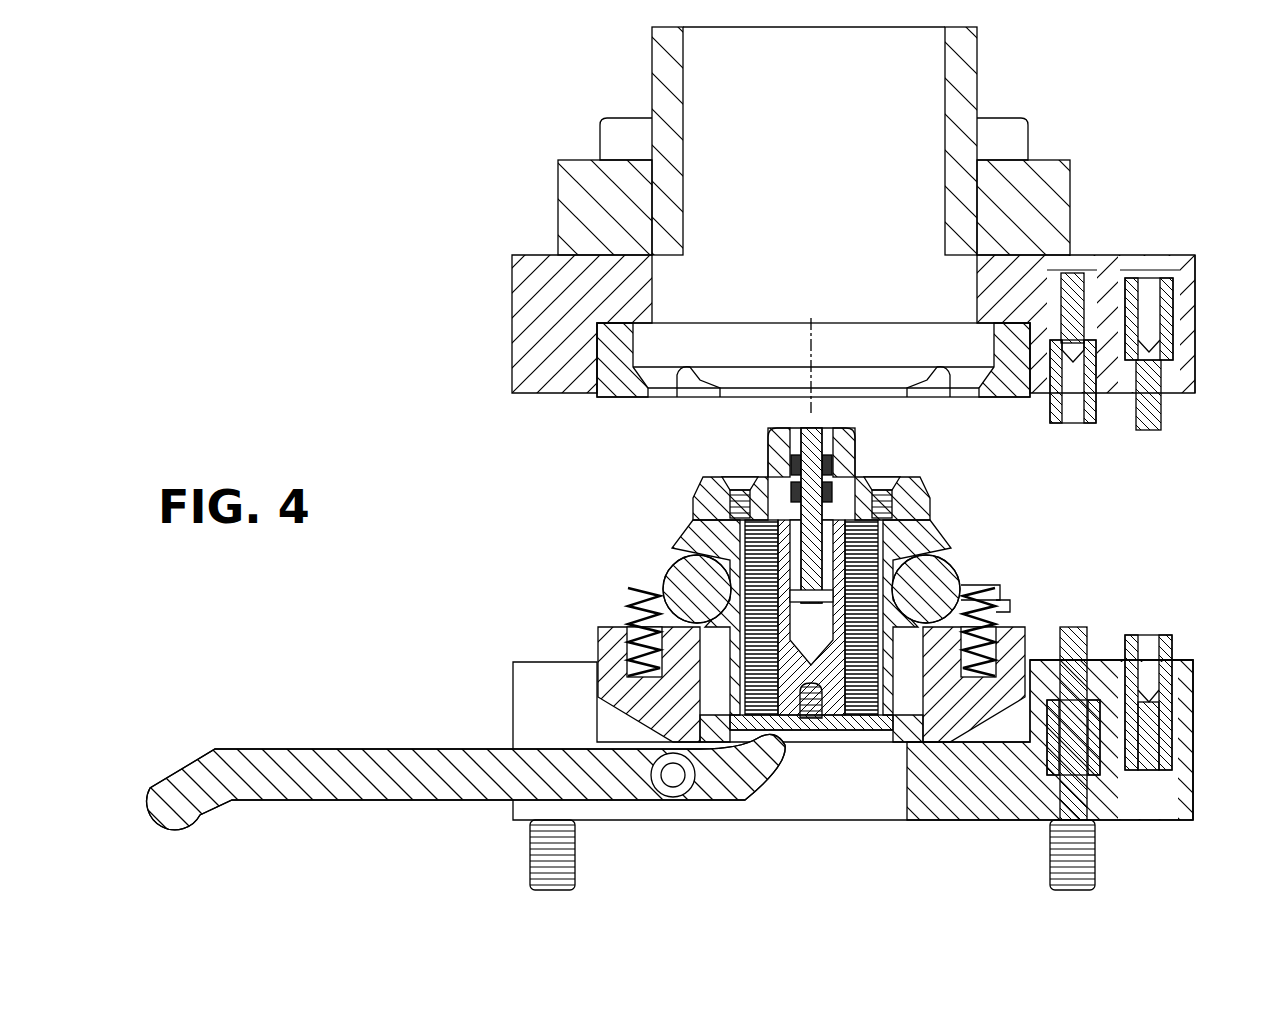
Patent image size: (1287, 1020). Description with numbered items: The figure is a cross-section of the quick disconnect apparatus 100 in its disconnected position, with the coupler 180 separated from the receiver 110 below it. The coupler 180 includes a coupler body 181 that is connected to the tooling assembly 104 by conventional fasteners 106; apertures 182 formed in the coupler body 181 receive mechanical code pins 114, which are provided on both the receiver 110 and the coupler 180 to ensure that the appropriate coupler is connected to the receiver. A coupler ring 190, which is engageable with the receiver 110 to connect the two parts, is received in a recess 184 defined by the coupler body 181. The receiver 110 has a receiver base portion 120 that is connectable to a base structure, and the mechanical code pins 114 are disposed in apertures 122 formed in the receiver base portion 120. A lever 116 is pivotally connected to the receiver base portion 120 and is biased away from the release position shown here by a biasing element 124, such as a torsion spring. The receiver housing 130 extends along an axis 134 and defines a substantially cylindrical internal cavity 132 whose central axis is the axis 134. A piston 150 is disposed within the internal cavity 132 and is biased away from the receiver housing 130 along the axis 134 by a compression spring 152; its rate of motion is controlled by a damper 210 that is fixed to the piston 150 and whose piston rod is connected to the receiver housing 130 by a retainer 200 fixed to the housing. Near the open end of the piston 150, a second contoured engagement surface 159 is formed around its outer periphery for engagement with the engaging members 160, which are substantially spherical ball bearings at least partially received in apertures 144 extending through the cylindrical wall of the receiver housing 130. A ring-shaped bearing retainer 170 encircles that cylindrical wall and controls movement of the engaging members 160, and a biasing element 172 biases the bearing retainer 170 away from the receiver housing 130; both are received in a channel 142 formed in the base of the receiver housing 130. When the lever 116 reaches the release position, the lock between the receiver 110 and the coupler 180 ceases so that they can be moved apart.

The quick disconnect apparatus 100 is at (438, 168).
The tooling assembly 104 is at (977, 85).
The fasteners 106 is at (1025, 140).
The coupler 180 is at (1124, 527).
The coupler body 181 is at (1196, 300).
The apertures 182 is at (1165, 393).
The mechanical code pins 114 is at (1147, 432).
The axis 134 is at (808, 340).
The retainer 200 is at (818, 430).
The damper 210 is at (840, 470).
The recess 184 is at (590, 378).
The coupler ring 190 is at (640, 398).
The second contoured engagement surface 159 is at (692, 508).
The receiver housing 130 is at (925, 520).
The apertures 144 is at (666, 556).
The engaging members 160 is at (655, 570).
The bearing retainer 170 is at (998, 588).
The biasing element 172 is at (1018, 606).
The receiver 110 is at (500, 644).
The channel 142 is at (600, 640).
The receiver base portion 120 is at (522, 700).
The apertures 122 is at (1192, 700).
The lever 116 is at (300, 748).
The internal cavity 132 is at (777, 742).
The compression spring 152 is at (822, 728).
The piston 150 is at (860, 742).
The biasing element 124 is at (672, 792).